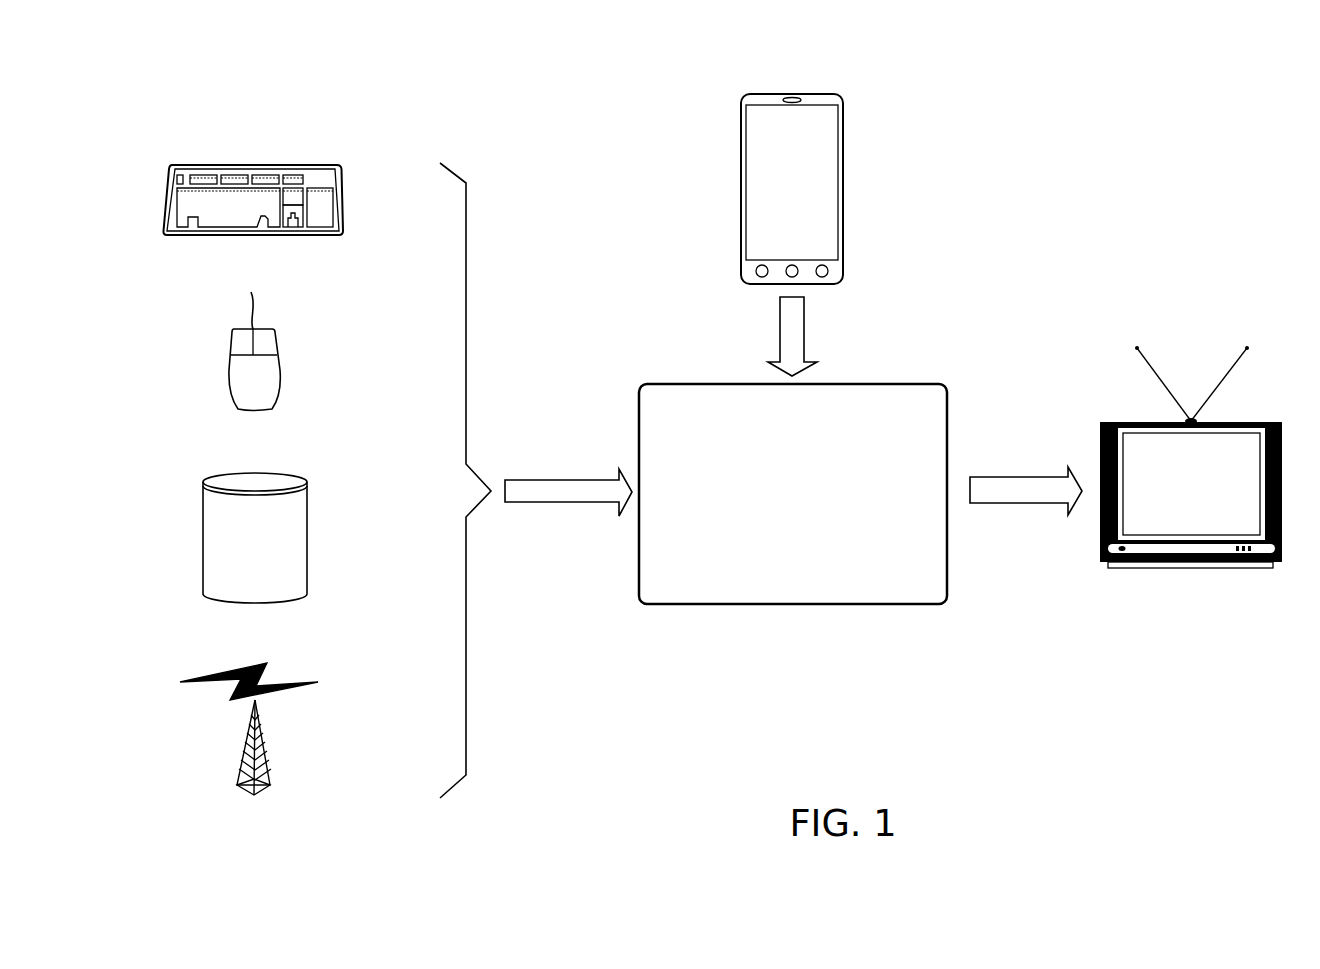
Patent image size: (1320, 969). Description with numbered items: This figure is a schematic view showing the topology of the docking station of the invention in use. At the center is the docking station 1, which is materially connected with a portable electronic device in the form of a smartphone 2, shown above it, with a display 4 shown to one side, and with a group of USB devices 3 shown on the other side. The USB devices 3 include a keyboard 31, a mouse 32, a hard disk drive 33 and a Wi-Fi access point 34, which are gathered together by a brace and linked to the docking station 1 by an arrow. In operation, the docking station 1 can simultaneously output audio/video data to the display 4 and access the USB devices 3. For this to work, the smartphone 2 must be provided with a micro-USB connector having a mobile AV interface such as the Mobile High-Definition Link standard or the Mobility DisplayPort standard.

The docking station 1 is at (875, 383).
The smartphone 2 is at (843, 228).
The USB devices 3 is at (340, 133).
The keyboard 31 is at (342, 198).
The mouse 32 is at (280, 367).
The hard disk drive 33 is at (305, 518).
The Wi-Fi access point 34 is at (277, 682).
The display 4 is at (1140, 569).